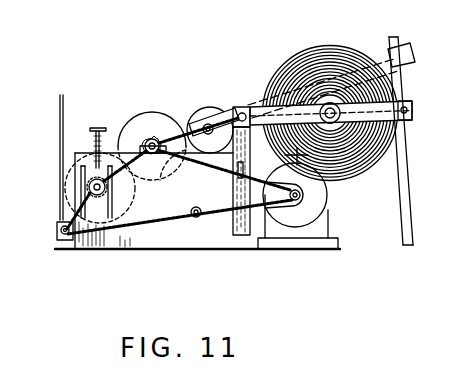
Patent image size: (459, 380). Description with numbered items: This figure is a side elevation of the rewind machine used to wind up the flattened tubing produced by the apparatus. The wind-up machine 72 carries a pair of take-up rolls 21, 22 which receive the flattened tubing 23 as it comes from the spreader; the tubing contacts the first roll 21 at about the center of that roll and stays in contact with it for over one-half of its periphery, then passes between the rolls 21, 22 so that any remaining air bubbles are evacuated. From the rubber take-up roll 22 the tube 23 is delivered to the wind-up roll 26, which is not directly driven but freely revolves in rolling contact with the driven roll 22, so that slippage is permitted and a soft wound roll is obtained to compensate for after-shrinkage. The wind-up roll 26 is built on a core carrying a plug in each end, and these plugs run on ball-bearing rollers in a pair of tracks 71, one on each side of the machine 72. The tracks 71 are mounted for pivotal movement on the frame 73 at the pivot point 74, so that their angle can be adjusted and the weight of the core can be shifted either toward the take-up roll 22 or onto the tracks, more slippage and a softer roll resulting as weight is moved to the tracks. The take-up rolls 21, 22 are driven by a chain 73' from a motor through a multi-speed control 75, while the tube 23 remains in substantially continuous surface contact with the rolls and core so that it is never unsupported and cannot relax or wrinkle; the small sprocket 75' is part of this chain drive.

The take-up roll 21 is at (70, 190).
The take-up roll 22 is at (150, 122).
The flattened tubing 23 is at (60, 143).
The wind-up roll 26 is at (212, 112).
The tracks 71 is at (222, 128).
The wind-up machine 72 is at (193, 250).
The frame 73 is at (253, 181).
The chain 73' is at (105, 215).
The pivot point 74 is at (246, 106).
The multi-speed control 75 is at (310, 193).
The sprocket 75' is at (55, 250).